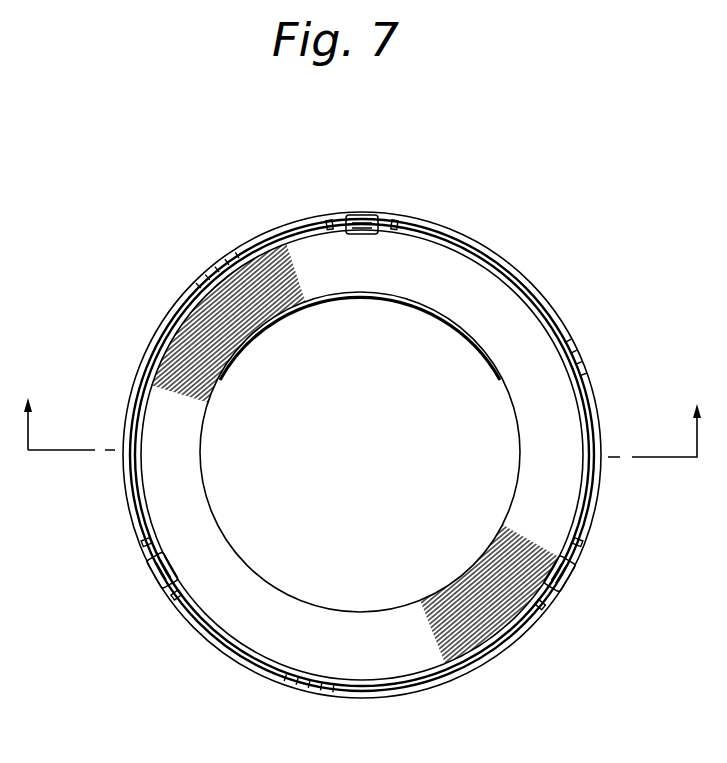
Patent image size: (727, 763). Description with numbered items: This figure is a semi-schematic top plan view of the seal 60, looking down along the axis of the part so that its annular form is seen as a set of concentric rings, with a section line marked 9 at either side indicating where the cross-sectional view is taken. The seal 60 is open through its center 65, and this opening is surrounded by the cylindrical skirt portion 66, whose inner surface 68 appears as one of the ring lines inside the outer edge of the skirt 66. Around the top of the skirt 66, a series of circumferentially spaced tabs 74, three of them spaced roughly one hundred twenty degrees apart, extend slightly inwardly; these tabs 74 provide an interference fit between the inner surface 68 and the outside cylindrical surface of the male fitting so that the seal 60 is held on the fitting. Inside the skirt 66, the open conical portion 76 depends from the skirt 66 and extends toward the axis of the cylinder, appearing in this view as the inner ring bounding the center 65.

The seal 60 is at (359, 401).
The center 65 is at (370, 504).
The cylindrical skirt portion 66 is at (568, 315).
The inner surface 68 is at (580, 401).
The tabs 74 is at (363, 202).
The open conical portion 76 is at (358, 266).
The section line 9- 9 is at (361, 415).